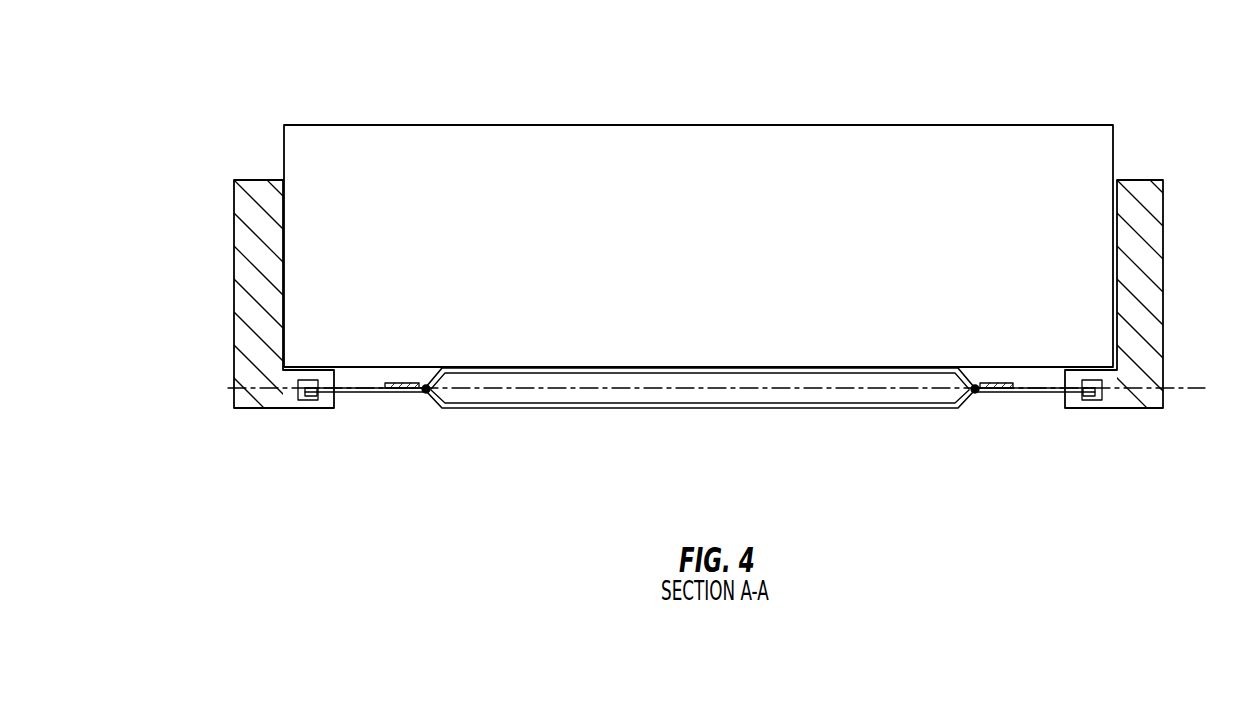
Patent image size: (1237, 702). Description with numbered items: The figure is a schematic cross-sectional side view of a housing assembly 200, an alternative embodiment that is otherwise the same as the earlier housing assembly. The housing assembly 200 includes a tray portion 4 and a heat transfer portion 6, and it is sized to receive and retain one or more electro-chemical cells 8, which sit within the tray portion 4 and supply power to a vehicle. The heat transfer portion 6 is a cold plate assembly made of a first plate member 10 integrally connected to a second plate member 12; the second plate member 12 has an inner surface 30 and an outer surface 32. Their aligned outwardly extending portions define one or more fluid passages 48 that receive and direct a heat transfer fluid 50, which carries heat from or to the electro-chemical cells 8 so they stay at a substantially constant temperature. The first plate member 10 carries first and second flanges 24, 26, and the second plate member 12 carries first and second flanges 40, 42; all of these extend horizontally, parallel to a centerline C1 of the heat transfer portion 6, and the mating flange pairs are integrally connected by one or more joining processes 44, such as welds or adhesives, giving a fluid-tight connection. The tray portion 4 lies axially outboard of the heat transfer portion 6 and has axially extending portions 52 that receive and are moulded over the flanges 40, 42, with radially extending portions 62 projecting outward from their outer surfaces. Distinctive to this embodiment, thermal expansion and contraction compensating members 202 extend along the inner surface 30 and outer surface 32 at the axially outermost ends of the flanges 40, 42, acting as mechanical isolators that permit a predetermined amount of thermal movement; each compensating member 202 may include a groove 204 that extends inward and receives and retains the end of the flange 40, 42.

The housing assembly 200 is at (1158, 52).
The tray portion 4 is at (702, 288).
The radially extending portion 62 is at (240, 248).
The electro-chemical cell 8 is at (706, 182).
The heat transfer portion 6 is at (634, 476).
The first plate member 10 is at (750, 367).
The second plate member 12 is at (700, 450).
The fluid passage 48 is at (732, 403).
The heat transfer fluid 50 is at (700, 405).
The first flange 40 is at (366, 396).
The second flange 42 is at (1045, 397).
The joining process 44 is at (428, 406).
The first flange 24 is at (392, 384).
The second flange 26 is at (1010, 384).
The inner surface 30 is at (572, 409).
The outer surface 32 is at (550, 409).
The axially extending portion 52 is at (712, 449).
The groove 204 is at (730, 449).
The thermal expansion and contraction compensating member 202 is at (1155, 440).
The centerline C1 is at (1195, 388).